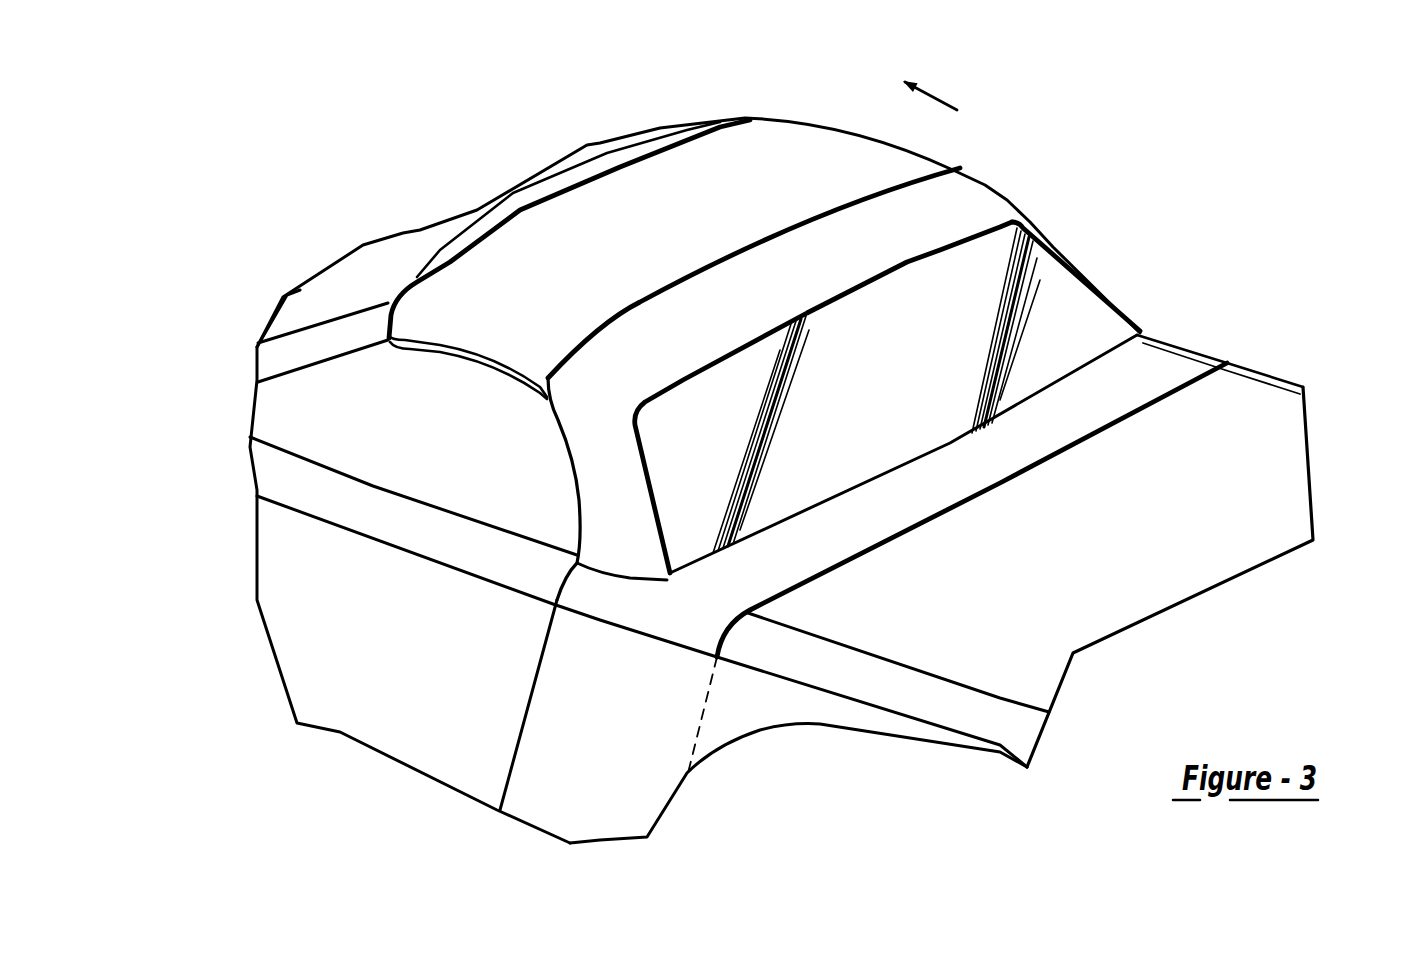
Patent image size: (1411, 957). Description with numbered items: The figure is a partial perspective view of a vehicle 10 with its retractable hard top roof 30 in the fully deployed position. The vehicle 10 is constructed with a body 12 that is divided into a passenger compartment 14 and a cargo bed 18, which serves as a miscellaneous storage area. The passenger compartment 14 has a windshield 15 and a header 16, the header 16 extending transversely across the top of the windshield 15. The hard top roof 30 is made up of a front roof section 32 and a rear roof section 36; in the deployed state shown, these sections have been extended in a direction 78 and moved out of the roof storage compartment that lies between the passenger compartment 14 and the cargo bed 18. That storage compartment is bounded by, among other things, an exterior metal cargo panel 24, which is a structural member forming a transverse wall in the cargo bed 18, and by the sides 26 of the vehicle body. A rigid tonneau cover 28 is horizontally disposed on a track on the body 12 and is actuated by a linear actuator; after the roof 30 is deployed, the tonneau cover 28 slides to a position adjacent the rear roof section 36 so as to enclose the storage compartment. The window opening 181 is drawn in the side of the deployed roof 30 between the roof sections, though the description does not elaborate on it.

The vehicle 10 is at (1325, 360).
The body 12 is at (877, 683).
The passenger compartment 14 is at (273, 567).
The windshield 15 is at (342, 282).
The header 16 is at (702, 122).
The cargo bed 18 is at (1282, 472).
The exterior cargo panel 24 is at (703, 723).
The sides 26 is at (588, 733).
The tonneau cover 28 is at (1150, 367).
The hard top roof 30 is at (1039, 157).
The front roof section 32 is at (726, 223).
The rear roof section 36 is at (813, 271).
The direction 78 is at (945, 115).
The window opening 181 is at (906, 353).